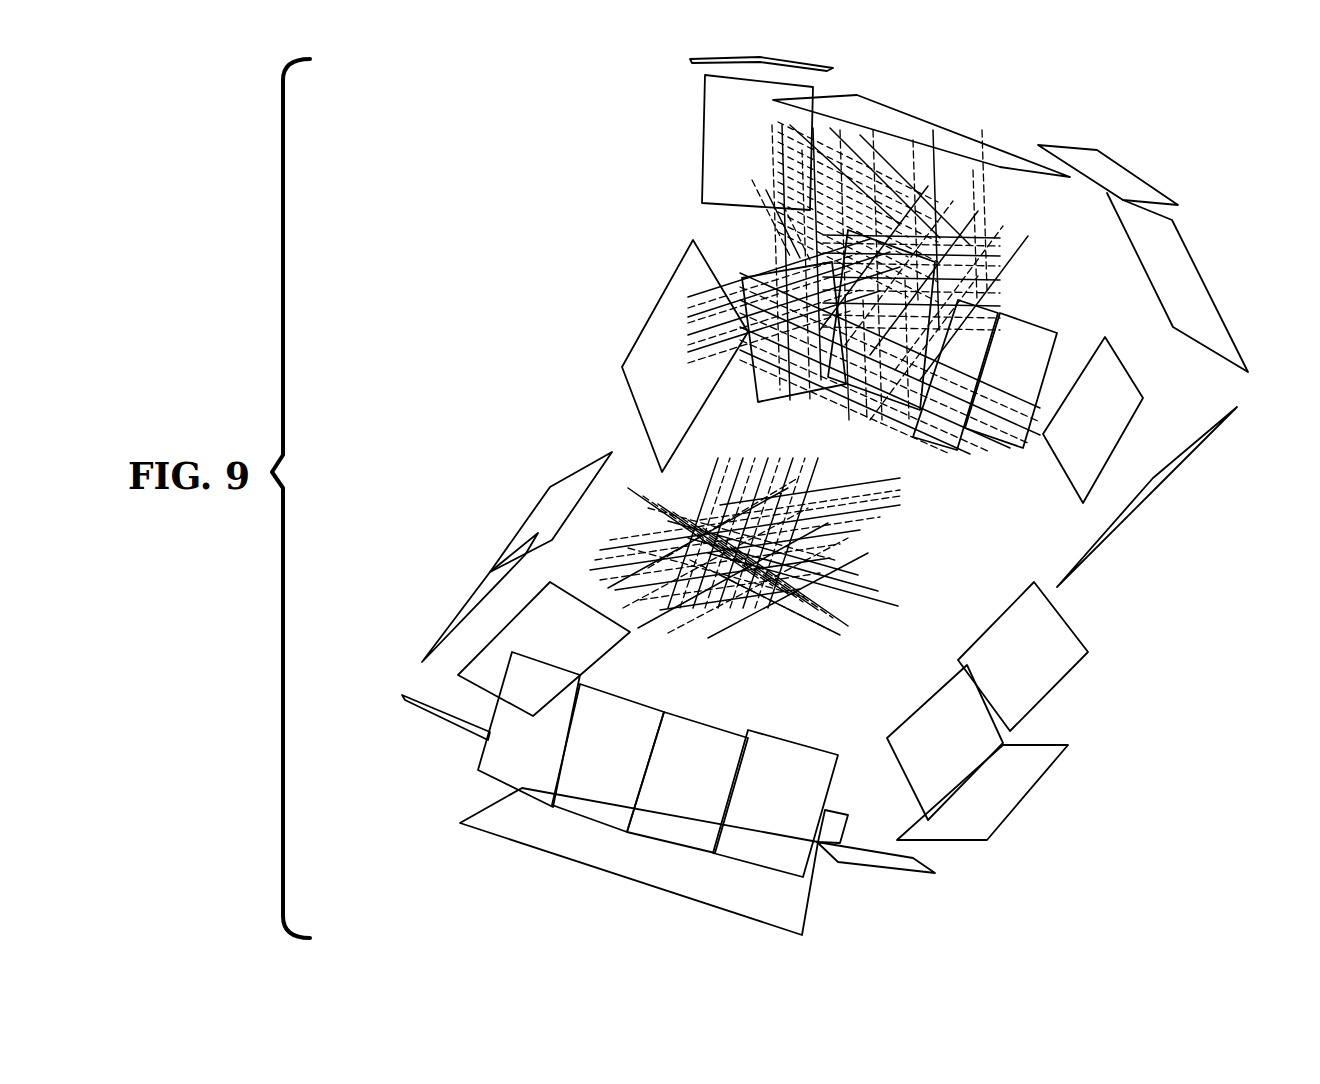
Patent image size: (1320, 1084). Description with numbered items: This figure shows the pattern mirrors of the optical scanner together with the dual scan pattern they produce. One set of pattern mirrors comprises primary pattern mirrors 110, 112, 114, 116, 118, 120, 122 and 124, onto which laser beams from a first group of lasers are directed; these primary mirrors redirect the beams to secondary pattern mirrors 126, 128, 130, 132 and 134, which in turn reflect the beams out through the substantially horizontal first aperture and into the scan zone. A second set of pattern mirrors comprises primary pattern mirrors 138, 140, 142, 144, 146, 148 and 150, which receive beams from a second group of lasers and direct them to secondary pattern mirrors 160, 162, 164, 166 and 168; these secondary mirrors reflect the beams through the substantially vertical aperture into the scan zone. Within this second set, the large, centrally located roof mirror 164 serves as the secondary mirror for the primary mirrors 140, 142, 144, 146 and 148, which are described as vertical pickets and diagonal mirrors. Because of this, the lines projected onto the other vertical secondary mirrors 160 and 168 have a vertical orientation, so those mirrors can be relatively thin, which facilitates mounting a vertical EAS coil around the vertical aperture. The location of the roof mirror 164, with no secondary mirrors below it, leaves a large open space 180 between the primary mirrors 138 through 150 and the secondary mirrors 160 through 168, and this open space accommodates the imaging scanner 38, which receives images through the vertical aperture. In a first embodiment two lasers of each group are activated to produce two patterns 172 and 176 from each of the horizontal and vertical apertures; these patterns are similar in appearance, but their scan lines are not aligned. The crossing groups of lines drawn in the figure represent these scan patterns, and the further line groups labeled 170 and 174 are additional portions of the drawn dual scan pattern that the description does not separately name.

The imaging scanner 38 is at (930, 197).
The primary pattern mirror 110 is at (1085, 635).
The primary pattern mirror 112 is at (940, 693).
The primary pattern mirror 114 is at (800, 738).
The primary pattern mirror 116 is at (707, 725).
The primary pattern mirror 118 is at (625, 693).
The primary pattern mirror 120 is at (487, 777).
The primary pattern mirror 122 is at (462, 603).
The primary pattern mirror 124 is at (588, 465).
The secondary pattern mirror 126 is at (1025, 795).
The secondary pattern mirror 128 is at (903, 872).
The secondary pattern mirror 130 is at (590, 870).
The secondary pattern mirror 132 is at (442, 720).
The secondary pattern mirror 134 is at (463, 685).
The primary pattern mirror 138 is at (1160, 485).
The primary pattern mirror 140 is at (1135, 379).
The primary pattern mirror 142 is at (1027, 322).
The primary pattern mirror 144 is at (953, 450).
The primary pattern mirror 146 is at (866, 388).
The primary pattern mirror 148 is at (781, 403).
The primary pattern mirror 150 is at (663, 295).
The secondary pattern mirror 160 is at (1205, 278).
The secondary pattern mirror 162 is at (1138, 172).
The roof mirror 164 is at (933, 117).
The secondary pattern mirror 166 is at (820, 69).
The secondary pattern mirror 168 is at (706, 137).
The fiber bundle 170 is at (853, 563).
The scan pattern 172 is at (985, 216).
The fiber bundle 174 is at (867, 492).
The scan pattern 176 is at (752, 250).
The open space 180 is at (998, 200).